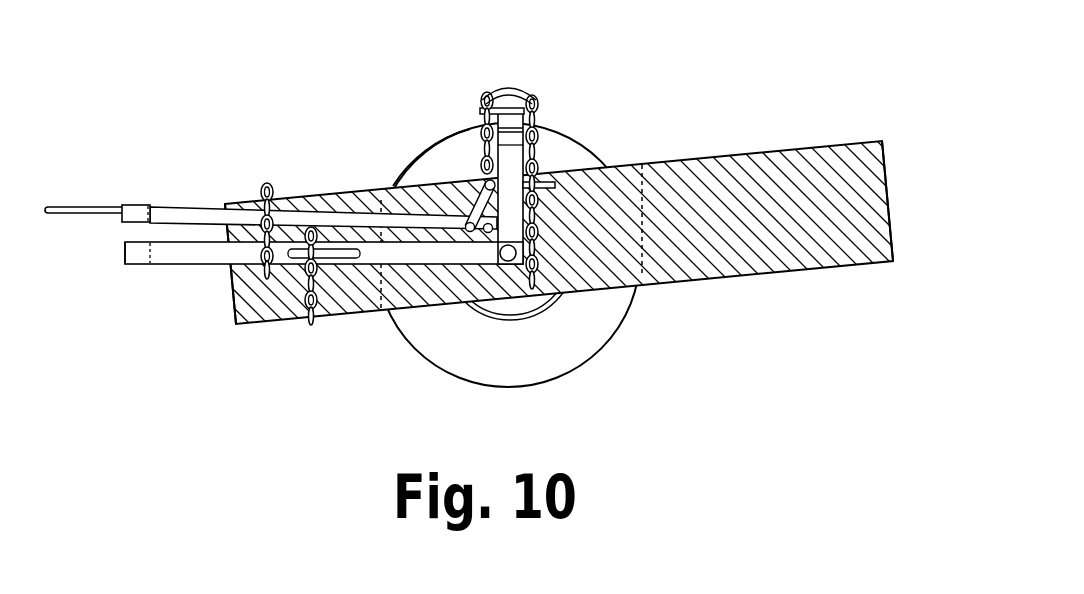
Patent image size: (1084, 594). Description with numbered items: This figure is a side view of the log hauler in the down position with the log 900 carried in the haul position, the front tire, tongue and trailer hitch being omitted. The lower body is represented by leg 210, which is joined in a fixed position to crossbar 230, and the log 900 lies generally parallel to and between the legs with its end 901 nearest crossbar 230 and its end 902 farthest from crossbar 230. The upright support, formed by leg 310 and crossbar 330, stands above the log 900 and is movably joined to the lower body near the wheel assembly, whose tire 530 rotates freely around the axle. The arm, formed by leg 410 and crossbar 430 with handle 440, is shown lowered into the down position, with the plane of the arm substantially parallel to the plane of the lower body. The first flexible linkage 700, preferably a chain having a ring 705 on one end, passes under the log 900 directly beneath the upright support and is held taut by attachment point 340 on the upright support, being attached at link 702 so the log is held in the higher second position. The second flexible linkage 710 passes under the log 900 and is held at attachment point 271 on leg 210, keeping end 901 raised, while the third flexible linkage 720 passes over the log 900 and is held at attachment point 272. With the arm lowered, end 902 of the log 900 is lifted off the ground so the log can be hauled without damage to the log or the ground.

The leg 210 is at (172, 262).
The crossbar 230 is at (131, 262).
The attachment point 271 is at (294, 228).
The attachment point 272 is at (272, 285).
The leg 310 is at (497, 184).
The crossbar 330 is at (540, 113).
The attachment point 340 is at (521, 117).
The leg 410 is at (209, 203).
The crossbar 430 is at (139, 201).
The handle 440 is at (80, 198).
The tire 530 is at (426, 164).
The first flexible linkage 700 is at (577, 282).
The link 702 is at (486, 88).
The ring 705 is at (544, 163).
The second flexible linkage 710 is at (322, 292).
The third flexible linkage 720 is at (268, 183).
The log 900 is at (552, 235).
The end of log 901 is at (222, 296).
The end of log 902 is at (900, 200).